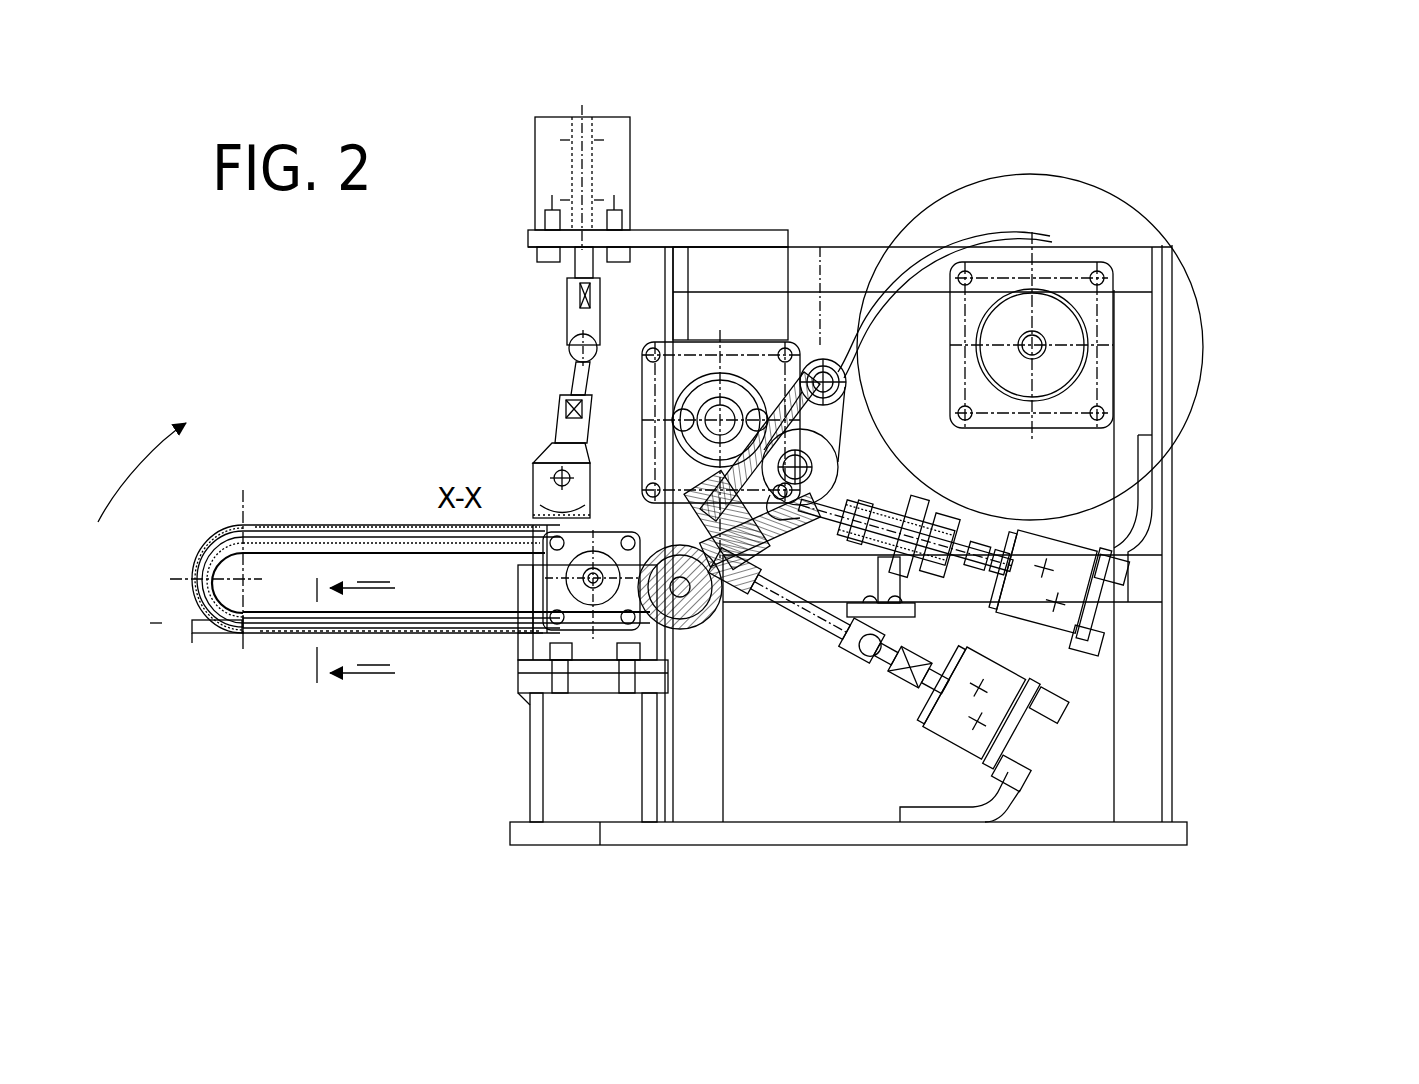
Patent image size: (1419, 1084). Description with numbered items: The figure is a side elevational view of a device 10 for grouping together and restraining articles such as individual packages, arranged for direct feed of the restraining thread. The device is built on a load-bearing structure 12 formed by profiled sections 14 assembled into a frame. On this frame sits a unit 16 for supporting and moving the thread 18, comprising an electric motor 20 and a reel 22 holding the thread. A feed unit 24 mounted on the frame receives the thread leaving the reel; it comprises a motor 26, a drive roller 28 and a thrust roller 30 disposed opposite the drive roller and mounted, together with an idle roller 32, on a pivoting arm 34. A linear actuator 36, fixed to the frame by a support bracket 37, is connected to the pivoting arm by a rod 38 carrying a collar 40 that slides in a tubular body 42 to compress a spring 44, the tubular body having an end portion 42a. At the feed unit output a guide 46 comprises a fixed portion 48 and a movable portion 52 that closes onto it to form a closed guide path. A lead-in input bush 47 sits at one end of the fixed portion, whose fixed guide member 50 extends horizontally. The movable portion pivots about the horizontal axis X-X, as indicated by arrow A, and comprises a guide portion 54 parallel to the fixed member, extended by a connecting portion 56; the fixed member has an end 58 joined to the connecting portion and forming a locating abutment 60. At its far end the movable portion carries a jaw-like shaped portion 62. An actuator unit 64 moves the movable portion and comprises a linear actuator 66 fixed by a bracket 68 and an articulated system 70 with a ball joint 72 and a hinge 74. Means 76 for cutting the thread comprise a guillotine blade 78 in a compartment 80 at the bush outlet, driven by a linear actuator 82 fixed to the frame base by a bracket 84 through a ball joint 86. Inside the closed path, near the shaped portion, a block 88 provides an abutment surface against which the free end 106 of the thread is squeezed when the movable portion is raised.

The device 10 is at (1314, 185).
The load-bearing structure 12 is at (1244, 570).
The profiled sections 14 is at (727, 807).
The unit for supporting and moving the restraining means 16 is at (1132, 180).
The thread 18 is at (1000, 232).
The motor 20 is at (1070, 337).
The reel 22 is at (1188, 362).
The feed unit 24 is at (758, 318).
The motor 26 is at (707, 350).
The drive roller 28 is at (710, 387).
The thrust roller 30 is at (833, 458).
The idle roller 32 is at (845, 370).
The pivoting arm 34 is at (837, 418).
The linear actuator 36 is at (1075, 610).
The support bracket 37 is at (1143, 500).
The rod 38 is at (840, 498).
The collar 40 is at (845, 532).
The tubular body 42 is at (939, 552).
The actuator rod end 42a is at (923, 560).
The spring 44 is at (958, 535).
The guide 46 is at (368, 563).
The lead-in input bush 47 is at (640, 505).
The fixed portion 48 is at (463, 660).
The fixed guide member 50 is at (433, 633).
The movable portion 52 is at (264, 495).
The guide portion 54 is at (353, 525).
The connecting portion 56 is at (207, 542).
The end 58 is at (227, 632).
The locating abutment 60 is at (258, 633).
The shaped portion 62 is at (503, 498).
The actuator unit 64 is at (480, 130).
The linear actuator 66 is at (620, 140).
The bracket 68 is at (528, 237).
The articulated system 70 is at (508, 382).
The ball joint 72 is at (567, 350).
The hinge 74 is at (552, 452).
The means for cutting the thread 76 is at (794, 675).
The blade 78 is at (803, 614).
The compartment 80 is at (735, 605).
The linear actuator 82 is at (973, 765).
The bracket 84 is at (1003, 797).
The ball joint 86 is at (890, 667).
The block 88 is at (583, 597).
The free end 106 is at (700, 643).